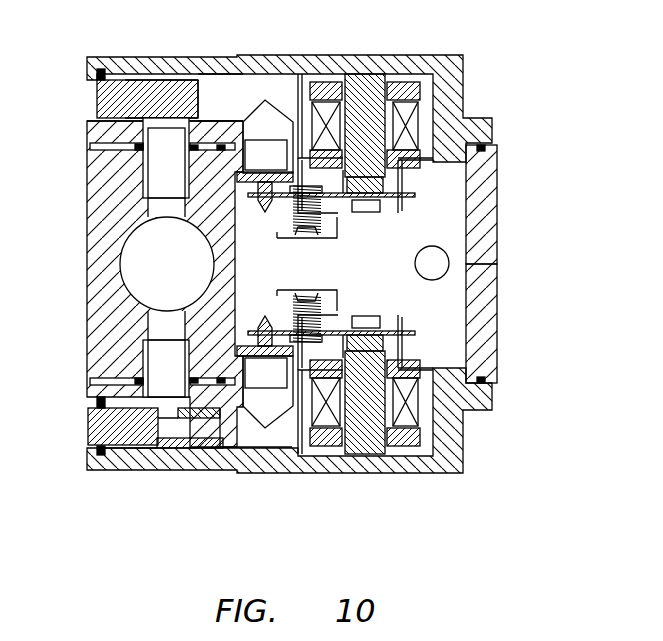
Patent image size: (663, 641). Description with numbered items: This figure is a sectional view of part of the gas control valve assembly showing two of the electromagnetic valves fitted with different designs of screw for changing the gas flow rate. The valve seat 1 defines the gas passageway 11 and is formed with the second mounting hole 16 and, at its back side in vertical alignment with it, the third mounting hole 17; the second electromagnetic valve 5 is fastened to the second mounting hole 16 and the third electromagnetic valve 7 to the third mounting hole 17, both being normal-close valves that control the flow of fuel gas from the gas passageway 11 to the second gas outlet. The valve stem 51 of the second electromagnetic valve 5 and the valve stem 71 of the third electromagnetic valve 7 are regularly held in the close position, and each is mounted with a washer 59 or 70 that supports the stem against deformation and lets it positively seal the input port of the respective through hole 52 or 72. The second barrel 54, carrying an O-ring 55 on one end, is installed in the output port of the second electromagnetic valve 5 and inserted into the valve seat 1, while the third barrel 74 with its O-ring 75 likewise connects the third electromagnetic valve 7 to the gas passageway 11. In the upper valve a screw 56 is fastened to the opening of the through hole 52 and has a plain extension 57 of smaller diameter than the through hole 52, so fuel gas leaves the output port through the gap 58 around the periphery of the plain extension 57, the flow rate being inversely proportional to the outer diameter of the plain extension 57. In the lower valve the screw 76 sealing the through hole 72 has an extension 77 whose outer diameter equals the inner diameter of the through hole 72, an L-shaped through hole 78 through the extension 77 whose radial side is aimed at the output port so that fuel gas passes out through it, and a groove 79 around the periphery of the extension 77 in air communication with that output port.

The valve seat 1 is at (110, 305).
The second electromagnetic valve 5 is at (368, 62).
The third electromagnetic valve 7 is at (368, 462).
The gas passageway 11 is at (165, 262).
The second mounting hole 16 is at (453, 178).
The third mounting hole 17 is at (453, 340).
The valve stem 51 is at (262, 150).
The through hole 52 is at (223, 93).
The second barrel 54 is at (130, 180).
The O-ring 55 is at (147, 145).
The screw 56 is at (118, 110).
The plain extension 57 is at (150, 88).
The gap 58 is at (166, 82).
The washer 59 is at (148, 200).
The washer 70 is at (240, 333).
The valve stem 71 is at (265, 330).
The through hole 72 is at (243, 433).
The third barrel 74 is at (130, 362).
The O-ring 75 is at (135, 383).
The screw 76 is at (118, 443).
The extension 77 is at (218, 447).
The L-shaped through hole 78 is at (190, 432).
The groove 79 is at (157, 445).